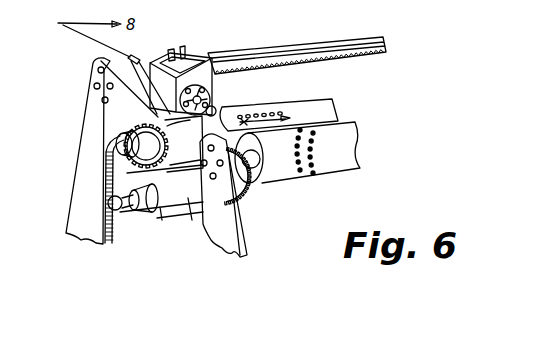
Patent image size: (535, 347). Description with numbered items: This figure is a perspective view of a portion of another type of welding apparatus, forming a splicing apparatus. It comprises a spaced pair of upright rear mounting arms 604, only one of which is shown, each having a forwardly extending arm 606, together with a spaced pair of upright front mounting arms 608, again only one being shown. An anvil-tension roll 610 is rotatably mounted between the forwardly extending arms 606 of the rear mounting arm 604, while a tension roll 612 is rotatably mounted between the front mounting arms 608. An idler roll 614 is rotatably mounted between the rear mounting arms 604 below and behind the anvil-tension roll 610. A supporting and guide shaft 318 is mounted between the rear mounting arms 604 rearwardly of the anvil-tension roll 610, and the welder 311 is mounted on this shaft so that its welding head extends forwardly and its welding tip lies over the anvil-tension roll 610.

The welder 311 is at (184, 37).
The supporting and guide shaft 318 is at (250, 54).
The rear mounting arm 604 is at (82, 177).
The forwardly extending arm 606 is at (148, 172).
The front mounting arm 608 is at (228, 228).
The anvil-tension roll 610 is at (333, 108).
The tension roll 612 is at (350, 158).
The idler roll 614 is at (193, 207).